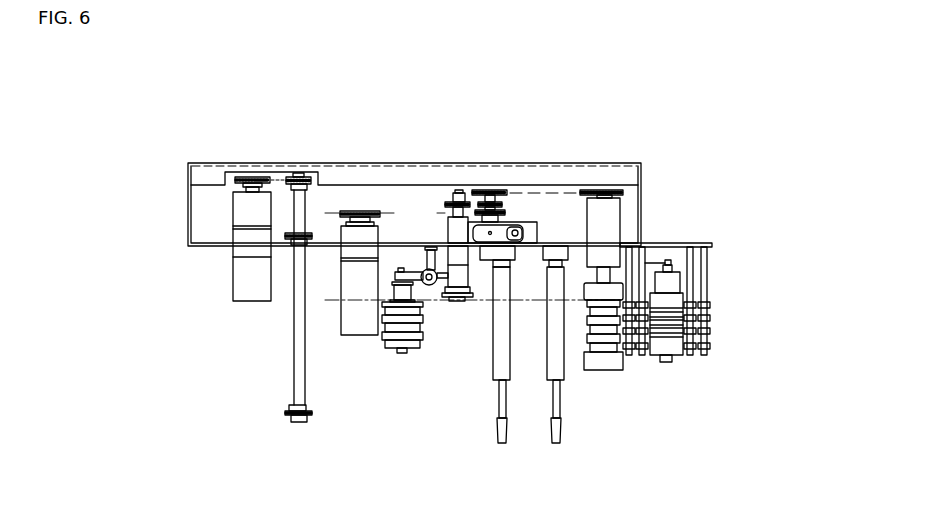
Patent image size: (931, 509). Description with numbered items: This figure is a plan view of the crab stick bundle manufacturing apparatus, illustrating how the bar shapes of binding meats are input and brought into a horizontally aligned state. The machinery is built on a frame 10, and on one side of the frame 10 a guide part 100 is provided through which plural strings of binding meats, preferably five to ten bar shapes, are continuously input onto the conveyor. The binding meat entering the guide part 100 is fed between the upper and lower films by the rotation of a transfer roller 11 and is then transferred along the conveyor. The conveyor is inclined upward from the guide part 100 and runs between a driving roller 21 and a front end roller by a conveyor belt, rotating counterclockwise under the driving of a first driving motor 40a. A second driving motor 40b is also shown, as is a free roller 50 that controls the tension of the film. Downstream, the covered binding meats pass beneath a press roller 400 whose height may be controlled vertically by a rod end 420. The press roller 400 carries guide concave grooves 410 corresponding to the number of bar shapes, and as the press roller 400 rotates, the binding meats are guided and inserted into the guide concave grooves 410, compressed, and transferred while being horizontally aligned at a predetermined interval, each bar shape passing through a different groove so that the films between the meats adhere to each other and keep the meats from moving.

The frame 10 is at (487, 162).
The transfer roller 11 is at (678, 352).
The driving roller 21 is at (607, 365).
The first driving motor 40a is at (347, 330).
The second driving motor 40b is at (242, 273).
The free roller 50 is at (498, 368).
The guide part 100 is at (717, 319).
The press roller 400 is at (393, 348).
The guide concave grooves 410 is at (425, 317).
The rod end 420 is at (429, 270).